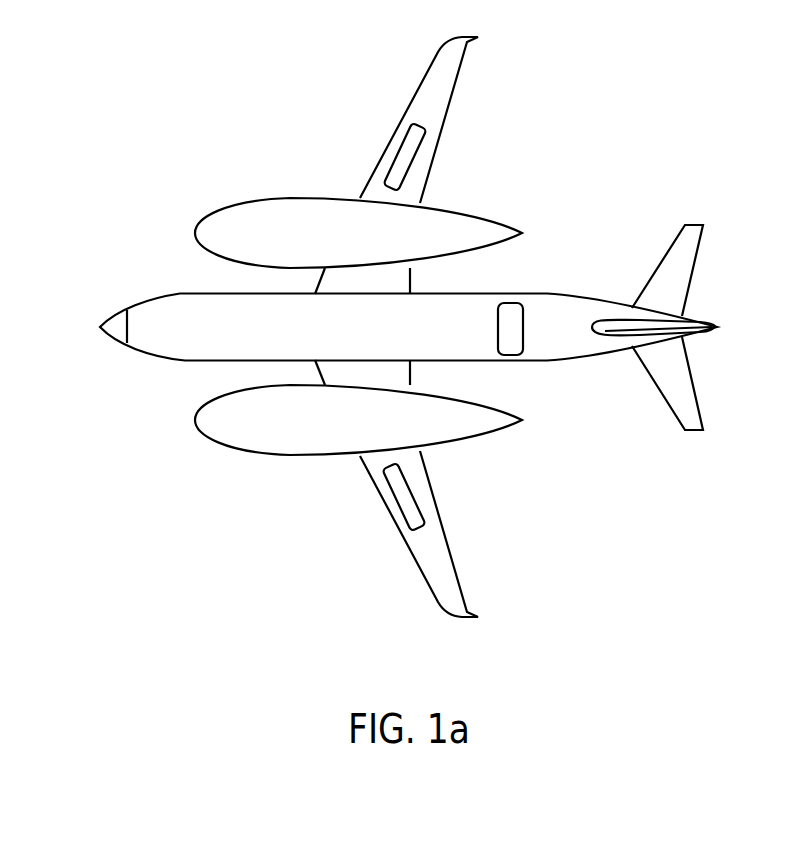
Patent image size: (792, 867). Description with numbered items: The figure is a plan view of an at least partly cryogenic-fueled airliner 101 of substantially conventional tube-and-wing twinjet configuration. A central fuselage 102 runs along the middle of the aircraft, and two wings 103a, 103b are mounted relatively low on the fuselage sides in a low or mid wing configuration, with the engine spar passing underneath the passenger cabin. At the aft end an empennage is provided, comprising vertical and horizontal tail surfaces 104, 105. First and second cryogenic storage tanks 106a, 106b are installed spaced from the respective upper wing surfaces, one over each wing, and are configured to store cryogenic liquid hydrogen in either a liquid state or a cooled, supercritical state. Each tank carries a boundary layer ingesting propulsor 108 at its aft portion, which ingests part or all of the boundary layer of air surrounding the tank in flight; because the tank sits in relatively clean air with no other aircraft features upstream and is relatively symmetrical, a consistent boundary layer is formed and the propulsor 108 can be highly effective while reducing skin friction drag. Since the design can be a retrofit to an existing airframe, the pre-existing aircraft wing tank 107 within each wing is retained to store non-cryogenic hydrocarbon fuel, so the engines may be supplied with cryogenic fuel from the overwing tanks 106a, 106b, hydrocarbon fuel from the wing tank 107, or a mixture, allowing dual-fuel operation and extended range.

The airliner 101 is at (537, 123).
The central fuselage 102 is at (557, 292).
The wing 103a is at (410, 558).
The wing 103b is at (413, 98).
The vertical tail surface 104 is at (625, 329).
The horizontal tail surface 105 is at (693, 282).
The first cryogenic storage tank 106a is at (252, 447).
The second cryogenic storage tank 106b is at (277, 202).
The aircraft wing tank 107 is at (423, 508).
The boundary layer ingesting propulsor 108 is at (510, 318).